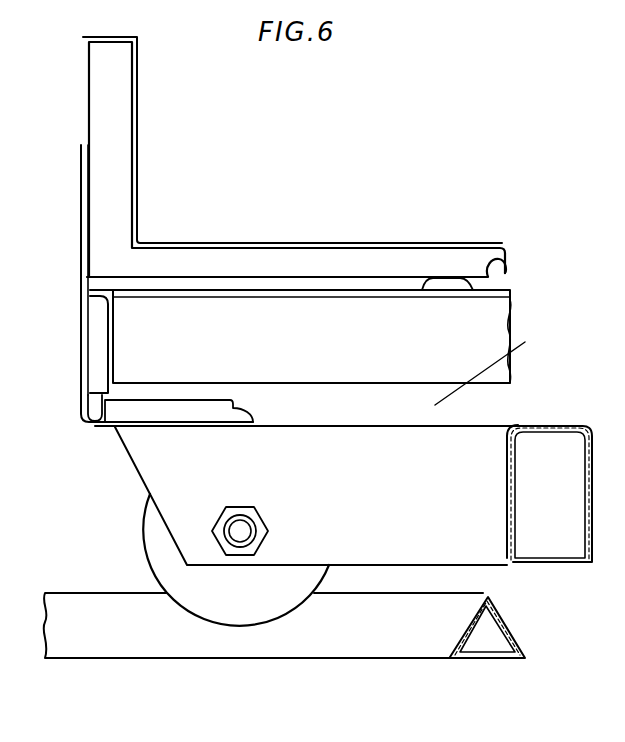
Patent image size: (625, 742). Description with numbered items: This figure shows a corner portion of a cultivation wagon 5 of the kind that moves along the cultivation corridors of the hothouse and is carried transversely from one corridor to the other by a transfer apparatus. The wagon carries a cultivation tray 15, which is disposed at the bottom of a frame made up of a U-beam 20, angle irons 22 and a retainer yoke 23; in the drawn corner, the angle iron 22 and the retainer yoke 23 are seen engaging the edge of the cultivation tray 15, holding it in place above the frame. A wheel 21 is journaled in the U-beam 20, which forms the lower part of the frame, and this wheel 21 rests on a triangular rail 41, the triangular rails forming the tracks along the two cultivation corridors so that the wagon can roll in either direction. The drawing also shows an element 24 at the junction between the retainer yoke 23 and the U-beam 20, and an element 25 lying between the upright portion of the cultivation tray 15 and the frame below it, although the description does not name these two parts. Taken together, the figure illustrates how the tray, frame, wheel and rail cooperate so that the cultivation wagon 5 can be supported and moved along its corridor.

The cultivation wagon 5 is at (435, 405).
The cultivation tray 15 is at (97, 199).
The U-beam 20 is at (160, 465).
The wheel 21 is at (157, 530).
The angle iron 22 is at (88, 286).
The retainer yoke 23 is at (100, 326).
The bracket 24 is at (95, 430).
The tray plate 25 is at (312, 295).
The triangular rail 41 is at (290, 637).